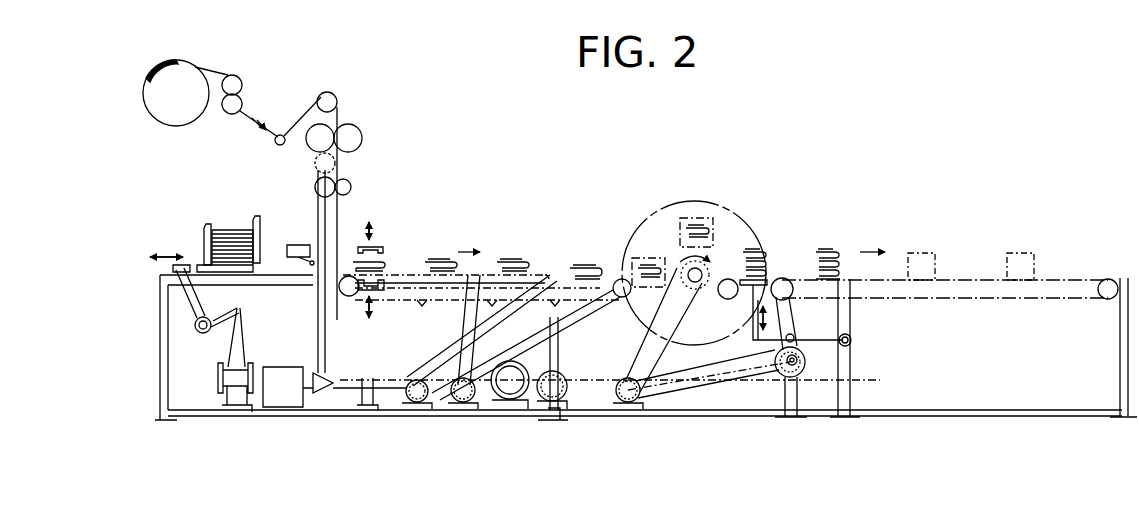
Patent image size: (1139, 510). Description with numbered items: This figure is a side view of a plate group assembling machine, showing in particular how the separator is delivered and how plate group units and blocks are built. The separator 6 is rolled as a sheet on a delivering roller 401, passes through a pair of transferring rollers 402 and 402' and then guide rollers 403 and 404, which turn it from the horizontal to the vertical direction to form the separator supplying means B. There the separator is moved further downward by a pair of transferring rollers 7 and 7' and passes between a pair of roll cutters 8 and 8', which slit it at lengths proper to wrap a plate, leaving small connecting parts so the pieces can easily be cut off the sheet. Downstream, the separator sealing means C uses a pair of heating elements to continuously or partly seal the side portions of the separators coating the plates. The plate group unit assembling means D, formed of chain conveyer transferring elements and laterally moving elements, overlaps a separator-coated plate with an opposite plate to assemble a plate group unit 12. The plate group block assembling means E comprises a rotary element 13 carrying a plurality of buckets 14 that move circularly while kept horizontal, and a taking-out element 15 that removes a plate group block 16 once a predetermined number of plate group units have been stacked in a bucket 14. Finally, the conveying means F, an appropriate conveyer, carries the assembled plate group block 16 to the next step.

The delivering roller 401 is at (152, 108).
The transferring roller 402 is at (260, 67).
The transferring roller 402' is at (234, 123).
The guide roller 403 is at (281, 133).
The guide roller 404 is at (335, 93).
The separator supplying means B is at (365, 127).
The transferring roller 7 is at (303, 146).
The transferring roller 7' is at (373, 138).
The separator 6 is at (337, 165).
The roll cutter 8 is at (309, 178).
The roll cutter 8' is at (374, 184).
The separator sealing means C is at (392, 258).
The plate group unit assembling means D is at (545, 258).
The plate group unit 12 is at (588, 268).
The plate group block assembling means E is at (663, 203).
The rotary element 13 is at (700, 200).
The bucket 14 is at (712, 220).
The taking-out element 15 is at (817, 347).
The plate group block 16 is at (835, 250).
The conveying means F is at (965, 277).